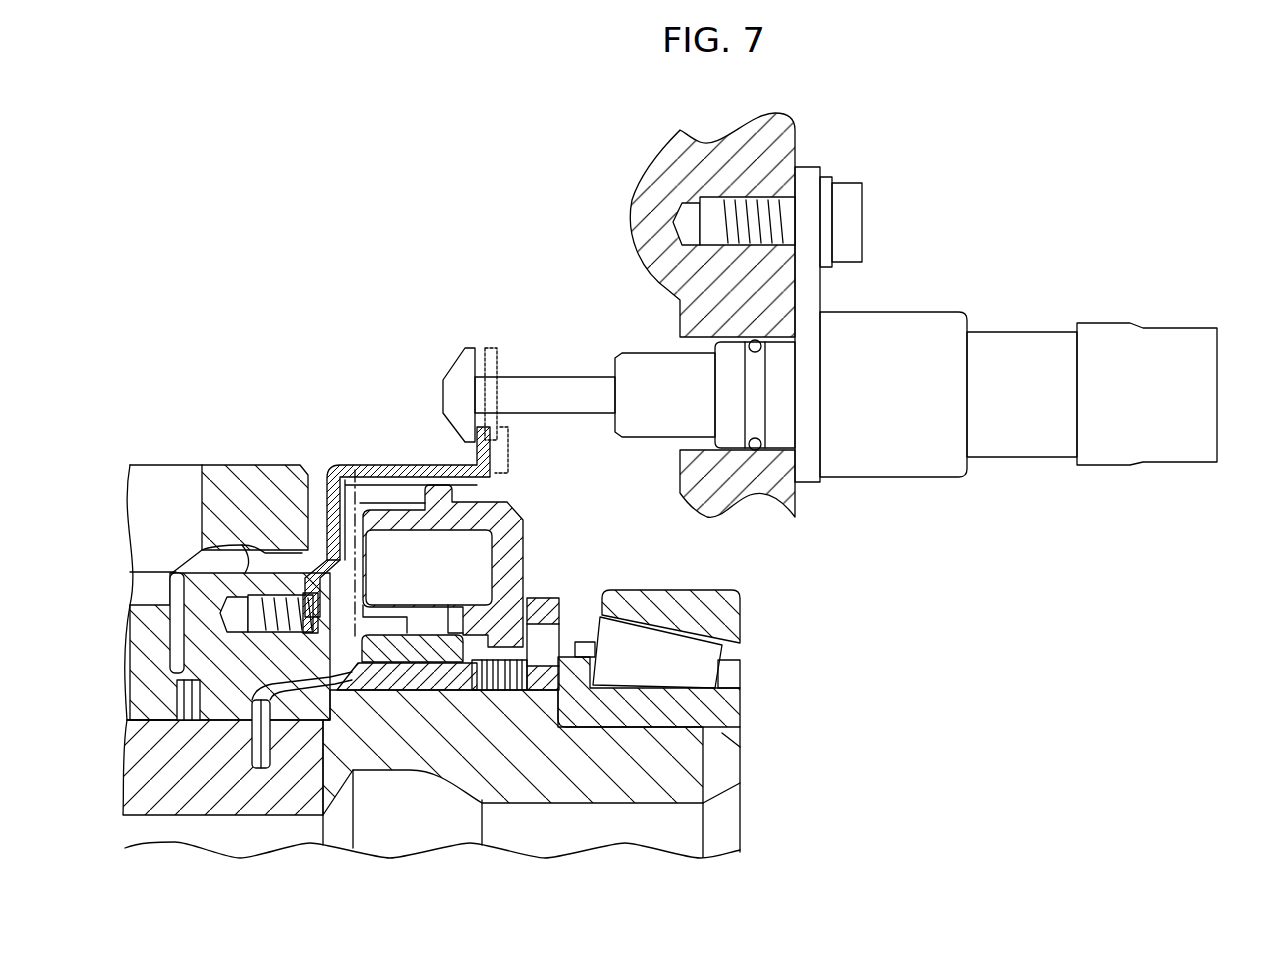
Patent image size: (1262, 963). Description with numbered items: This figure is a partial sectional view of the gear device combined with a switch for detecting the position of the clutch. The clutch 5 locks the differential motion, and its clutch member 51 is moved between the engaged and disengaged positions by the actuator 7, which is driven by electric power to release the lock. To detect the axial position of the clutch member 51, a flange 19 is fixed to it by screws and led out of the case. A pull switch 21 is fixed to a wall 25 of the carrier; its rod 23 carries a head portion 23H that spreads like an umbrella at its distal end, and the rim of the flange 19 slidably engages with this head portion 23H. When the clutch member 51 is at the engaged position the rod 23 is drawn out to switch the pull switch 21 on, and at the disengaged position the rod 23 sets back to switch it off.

The clutch 5 is at (180, 437).
The clutch member 51 is at (222, 555).
The flange 19 is at (347, 463).
The actuator 7 is at (535, 510).
The head portion 23H is at (457, 363).
The rod 23 is at (542, 375).
The wall 25 is at (797, 150).
The pull switch 21 is at (907, 267).